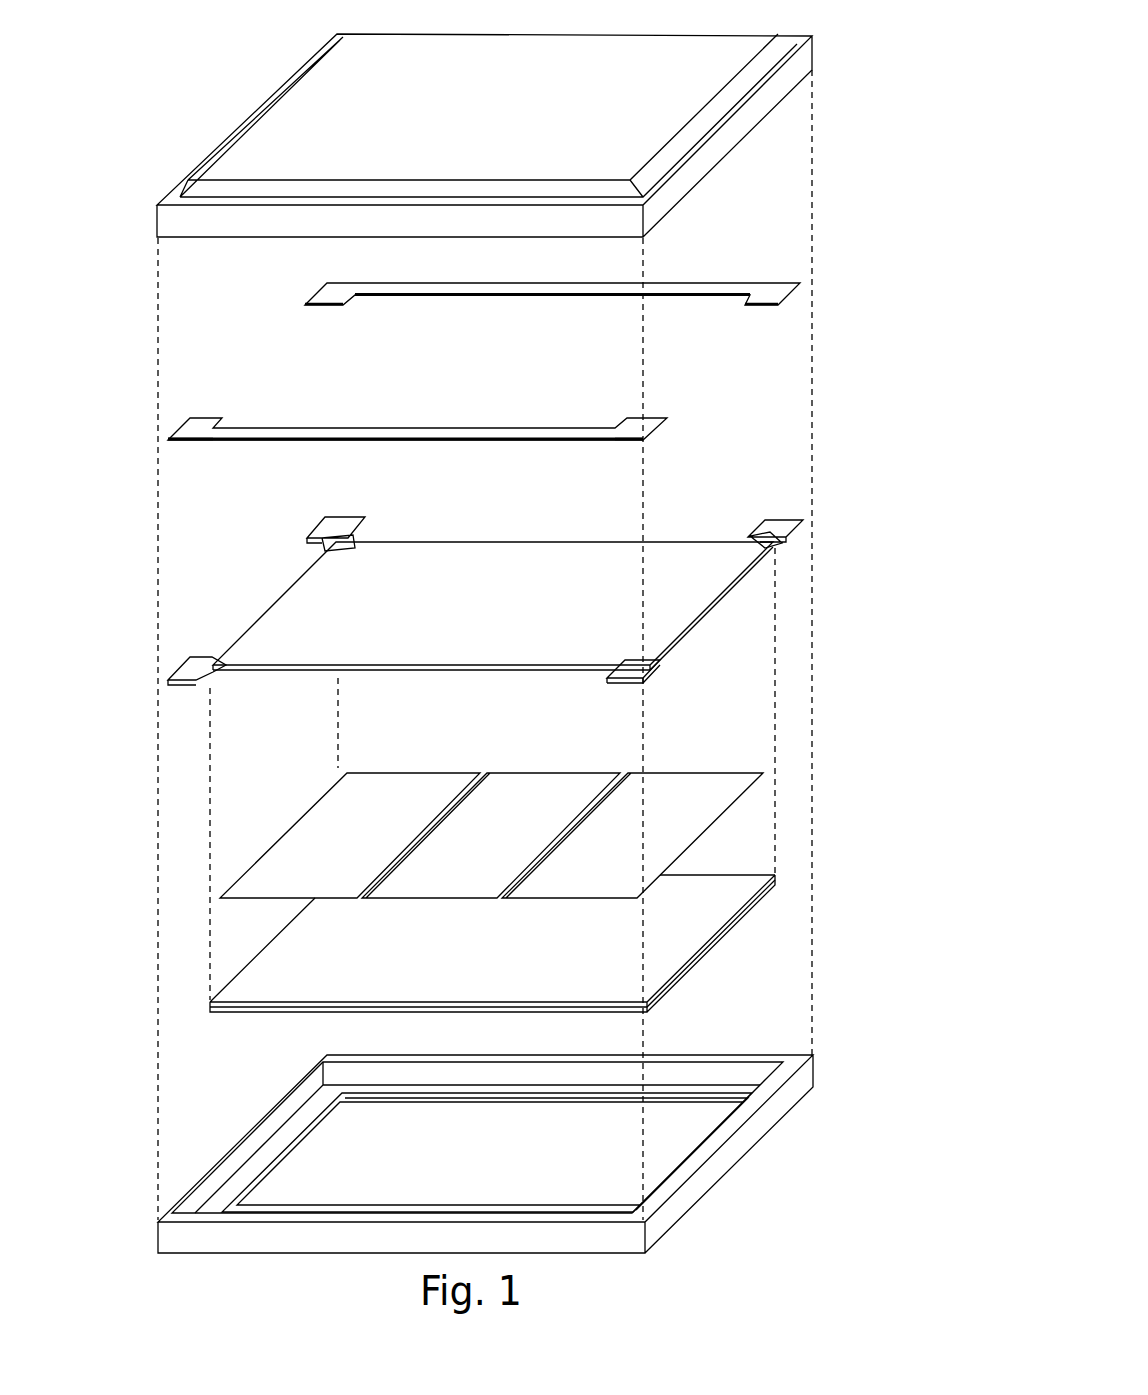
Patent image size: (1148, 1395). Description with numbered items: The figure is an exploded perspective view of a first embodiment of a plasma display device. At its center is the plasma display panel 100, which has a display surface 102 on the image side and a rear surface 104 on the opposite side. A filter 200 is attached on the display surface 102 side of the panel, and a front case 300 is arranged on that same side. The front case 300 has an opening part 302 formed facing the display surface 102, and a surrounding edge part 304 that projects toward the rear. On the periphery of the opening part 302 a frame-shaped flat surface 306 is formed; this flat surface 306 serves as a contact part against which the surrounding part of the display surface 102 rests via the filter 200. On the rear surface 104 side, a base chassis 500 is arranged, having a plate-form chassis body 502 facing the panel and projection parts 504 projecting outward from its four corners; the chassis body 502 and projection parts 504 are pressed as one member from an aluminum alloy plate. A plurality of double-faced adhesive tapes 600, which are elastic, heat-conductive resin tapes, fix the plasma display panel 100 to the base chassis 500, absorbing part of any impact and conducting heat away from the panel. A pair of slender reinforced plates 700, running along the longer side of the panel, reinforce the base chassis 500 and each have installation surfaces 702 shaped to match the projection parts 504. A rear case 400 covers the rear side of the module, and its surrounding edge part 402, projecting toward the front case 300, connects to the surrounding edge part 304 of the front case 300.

The plasma display panel 100 is at (561, 921).
The display surface 102 is at (745, 923).
The rear surface 104 is at (703, 880).
The filter 200 is at (706, 972).
The front case 300 is at (519, 1131).
The opening part 302 is at (658, 1159).
The surrounding edge part 304 is at (705, 1055).
The flat surface 306 is at (295, 1140).
The rear case 400 is at (834, 84).
The surrounding edge part 402 is at (735, 130).
The base chassis 500 is at (504, 588).
The chassis body 502 is at (505, 545).
The projection parts 504 is at (310, 526).
The double-faced adhesive tapes 600 is at (405, 773).
The reinforced plates 700 is at (680, 283).
The installation surfaces 702 is at (325, 307).